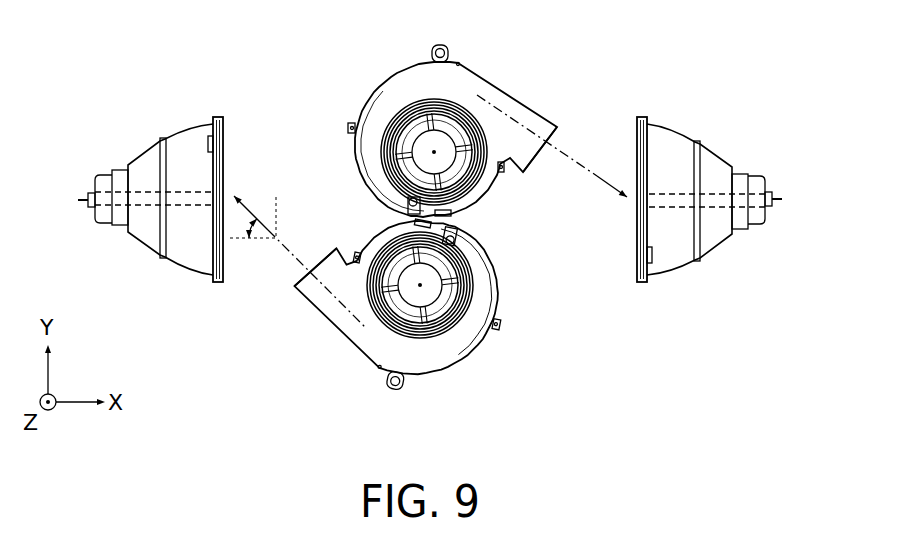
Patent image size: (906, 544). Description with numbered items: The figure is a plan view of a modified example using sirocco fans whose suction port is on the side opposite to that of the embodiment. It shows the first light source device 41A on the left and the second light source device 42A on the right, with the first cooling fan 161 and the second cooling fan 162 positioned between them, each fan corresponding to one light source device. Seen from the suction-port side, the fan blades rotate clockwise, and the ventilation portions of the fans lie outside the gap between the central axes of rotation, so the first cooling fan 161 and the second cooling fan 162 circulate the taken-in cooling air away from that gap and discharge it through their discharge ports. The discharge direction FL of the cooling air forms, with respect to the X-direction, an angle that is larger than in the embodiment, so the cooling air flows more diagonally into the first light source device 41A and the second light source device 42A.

The first cooling fan 161 is at (433, 364).
The second cooling fan 162 is at (488, 83).
The first light source device 41A is at (91, 140).
The second light source device 42A is at (749, 140).
The discharge direction FL is at (430, 211).